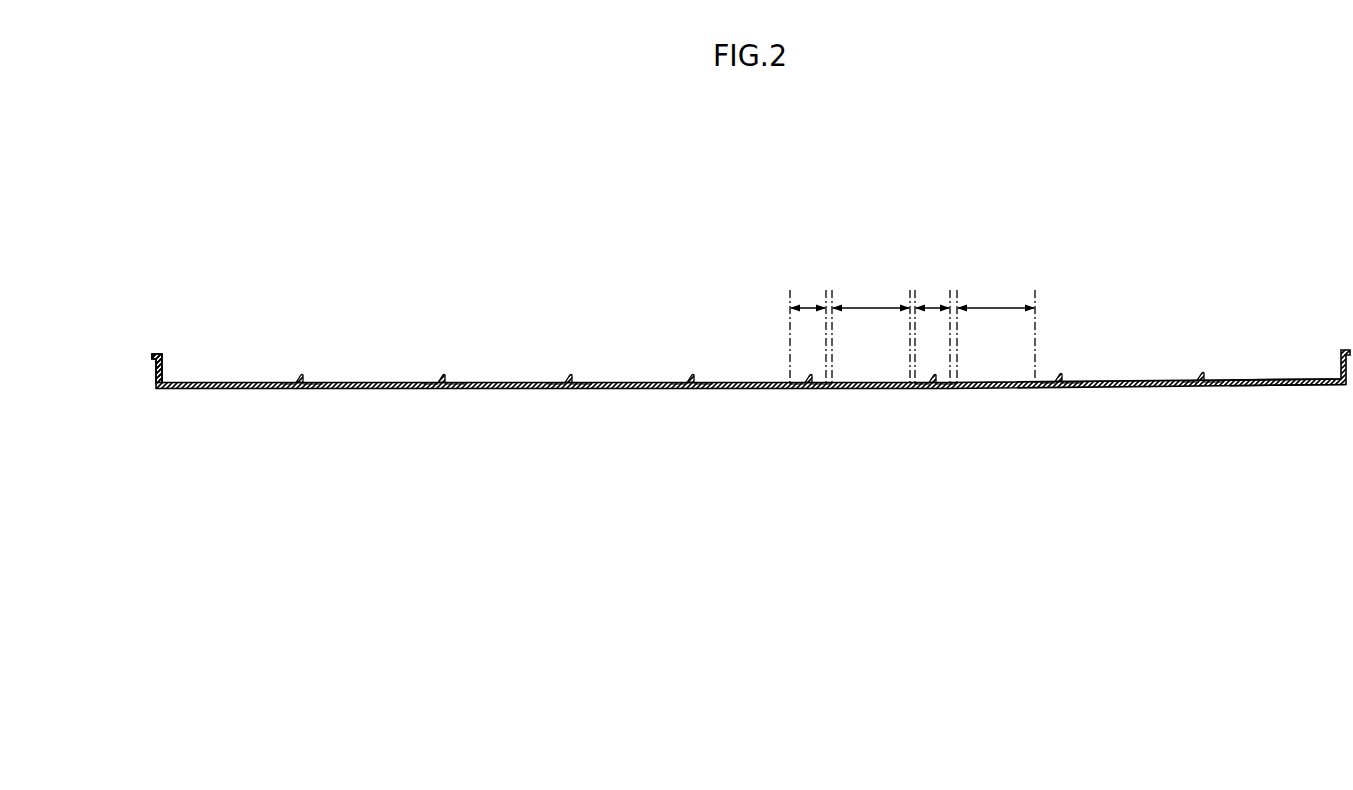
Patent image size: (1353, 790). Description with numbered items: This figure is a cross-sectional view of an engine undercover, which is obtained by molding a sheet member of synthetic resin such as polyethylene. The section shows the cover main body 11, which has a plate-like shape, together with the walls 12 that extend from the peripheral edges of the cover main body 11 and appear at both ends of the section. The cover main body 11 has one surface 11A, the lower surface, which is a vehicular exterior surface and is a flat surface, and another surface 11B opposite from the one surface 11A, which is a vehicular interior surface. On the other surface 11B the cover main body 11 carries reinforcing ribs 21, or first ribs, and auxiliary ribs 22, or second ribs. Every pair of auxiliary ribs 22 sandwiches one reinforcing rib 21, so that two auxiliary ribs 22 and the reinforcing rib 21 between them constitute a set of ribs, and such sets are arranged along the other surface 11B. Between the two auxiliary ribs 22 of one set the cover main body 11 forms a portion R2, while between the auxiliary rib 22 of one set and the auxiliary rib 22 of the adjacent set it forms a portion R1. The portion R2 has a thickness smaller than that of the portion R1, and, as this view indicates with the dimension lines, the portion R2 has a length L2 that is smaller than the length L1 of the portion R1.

The cover main body 11 is at (500, 389).
The one surface 11A is at (1293, 386).
The other surface 11B is at (1268, 380).
The wall 12 is at (163, 363).
The reinforcing rib 21 is at (301, 378).
The auxiliary rib 22 is at (282, 381).
The portion R1 is at (873, 389).
The portion R2 is at (798, 389).
The length L1 is at (933, 293).
The length L2 is at (870, 293).